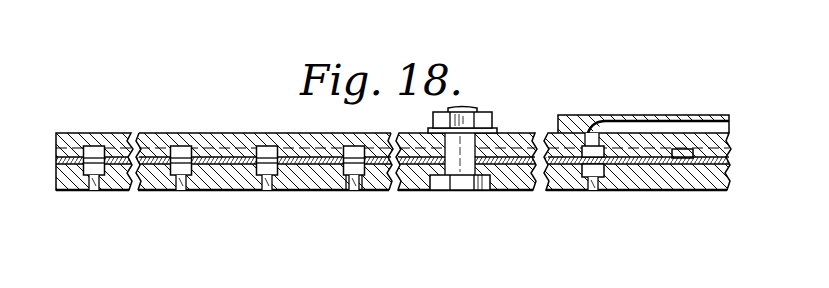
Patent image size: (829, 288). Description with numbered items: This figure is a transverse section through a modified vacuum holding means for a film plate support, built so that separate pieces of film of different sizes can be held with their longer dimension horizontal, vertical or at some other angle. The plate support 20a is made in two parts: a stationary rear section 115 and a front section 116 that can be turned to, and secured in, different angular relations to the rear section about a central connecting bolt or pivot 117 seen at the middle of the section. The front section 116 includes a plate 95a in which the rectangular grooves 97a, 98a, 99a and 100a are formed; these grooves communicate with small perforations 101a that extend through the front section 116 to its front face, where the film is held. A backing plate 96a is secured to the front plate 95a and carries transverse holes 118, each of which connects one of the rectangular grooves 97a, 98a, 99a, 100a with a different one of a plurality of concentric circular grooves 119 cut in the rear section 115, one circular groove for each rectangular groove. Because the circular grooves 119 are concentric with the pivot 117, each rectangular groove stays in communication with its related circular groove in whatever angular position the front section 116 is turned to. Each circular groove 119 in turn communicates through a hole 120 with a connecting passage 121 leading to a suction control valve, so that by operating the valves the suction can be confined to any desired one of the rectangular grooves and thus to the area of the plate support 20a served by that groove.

The plate support 20a is at (95, 161).
The plate 95a is at (658, 185).
The backing plate 96a is at (238, 163).
The rectangular groove 97a is at (356, 178).
The rectangular groove 98a is at (282, 178).
The rectangular groove 99a is at (156, 178).
The rectangular groove 100a is at (86, 168).
The perforations 101a is at (96, 190).
The rear section 115 is at (231, 133).
The front section 116 is at (208, 184).
The connecting bolt 117 is at (470, 108).
The transverse holes 118 is at (264, 160).
The circular grooves 119 is at (100, 152).
The hole 120 is at (593, 138).
The connecting passage 121 is at (654, 127).